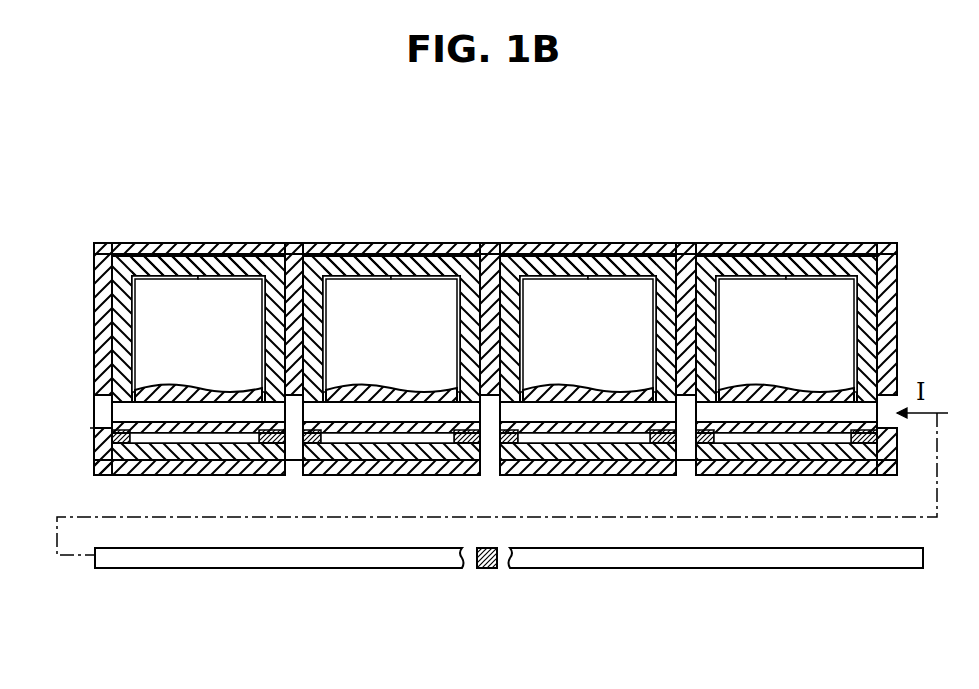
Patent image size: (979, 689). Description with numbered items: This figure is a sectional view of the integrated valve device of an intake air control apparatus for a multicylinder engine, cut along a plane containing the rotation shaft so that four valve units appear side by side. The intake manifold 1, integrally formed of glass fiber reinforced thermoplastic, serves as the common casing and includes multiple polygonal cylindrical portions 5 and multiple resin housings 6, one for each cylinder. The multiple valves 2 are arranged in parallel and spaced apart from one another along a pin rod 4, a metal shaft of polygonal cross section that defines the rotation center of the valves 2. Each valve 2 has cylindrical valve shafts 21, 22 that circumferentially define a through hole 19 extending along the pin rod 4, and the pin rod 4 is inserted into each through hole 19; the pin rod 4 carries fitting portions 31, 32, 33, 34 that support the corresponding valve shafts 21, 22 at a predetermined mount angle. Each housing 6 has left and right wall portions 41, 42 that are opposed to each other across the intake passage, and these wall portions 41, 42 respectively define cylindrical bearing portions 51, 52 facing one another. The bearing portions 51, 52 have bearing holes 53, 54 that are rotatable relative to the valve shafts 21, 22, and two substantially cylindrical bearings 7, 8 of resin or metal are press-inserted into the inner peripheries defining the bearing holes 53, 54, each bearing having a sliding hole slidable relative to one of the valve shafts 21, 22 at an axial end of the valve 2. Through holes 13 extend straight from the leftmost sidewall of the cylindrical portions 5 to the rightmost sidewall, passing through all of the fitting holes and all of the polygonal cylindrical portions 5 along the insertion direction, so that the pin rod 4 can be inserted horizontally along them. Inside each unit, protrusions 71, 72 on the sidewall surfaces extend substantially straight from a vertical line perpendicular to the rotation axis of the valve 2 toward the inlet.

The intake manifold 1 is at (495, 350).
The valve 2 is at (161, 260).
The pin rod 4 is at (487, 569).
The polygonal cylindrical portion 5 is at (200, 245).
The housing 6 is at (237, 256).
The bearing 7 is at (703, 446).
The bearing 8 is at (856, 446).
The through hole 13 is at (890, 423).
The through hole 19 is at (192, 444).
The valve shaft 21 is at (114, 468).
The valve shaft 22 is at (270, 446).
The fitting portion 31 is at (175, 569).
The fitting portion 32 is at (396, 569).
The fitting portion 33 is at (585, 569).
The fitting portion 34 is at (765, 569).
The left wall portion 41 is at (113, 250).
The right wall portion 42 is at (294, 252).
The bearing portion 51 is at (98, 398).
The bearing portion 52 is at (290, 403).
The bearing hole 53 is at (684, 410).
The bearing hole 54 is at (893, 468).
The protrusion 71 is at (140, 384).
The protrusion 72 is at (257, 384).